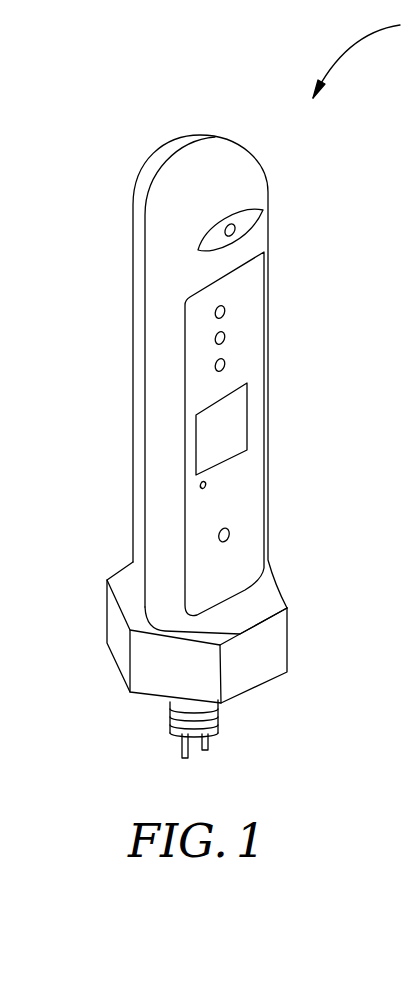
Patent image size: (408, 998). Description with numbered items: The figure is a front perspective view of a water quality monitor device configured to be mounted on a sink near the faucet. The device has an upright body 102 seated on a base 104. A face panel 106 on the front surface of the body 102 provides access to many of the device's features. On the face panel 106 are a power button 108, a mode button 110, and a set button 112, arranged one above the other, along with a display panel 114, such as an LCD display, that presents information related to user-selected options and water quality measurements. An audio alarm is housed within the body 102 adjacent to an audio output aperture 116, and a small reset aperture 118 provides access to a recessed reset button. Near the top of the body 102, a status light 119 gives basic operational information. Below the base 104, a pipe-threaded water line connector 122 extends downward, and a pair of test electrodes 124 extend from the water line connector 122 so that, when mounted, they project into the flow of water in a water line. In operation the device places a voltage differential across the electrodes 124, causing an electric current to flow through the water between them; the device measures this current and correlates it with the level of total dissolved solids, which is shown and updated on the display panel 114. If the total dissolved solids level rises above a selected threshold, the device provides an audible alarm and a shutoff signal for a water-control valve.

The body 102 is at (247, 163).
The base 104 is at (118, 629).
The face panel 106 is at (200, 352).
The power button 108 is at (225, 308).
The mode button 110 is at (225, 335).
The set button 112 is at (225, 362).
The display panel 114 is at (232, 430).
The audio output aperture 116 is at (228, 528).
The reset aperture 118 is at (199, 487).
The status light 119 is at (243, 242).
The water line connector 122 is at (170, 717).
The test electrodes 124 is at (210, 737).